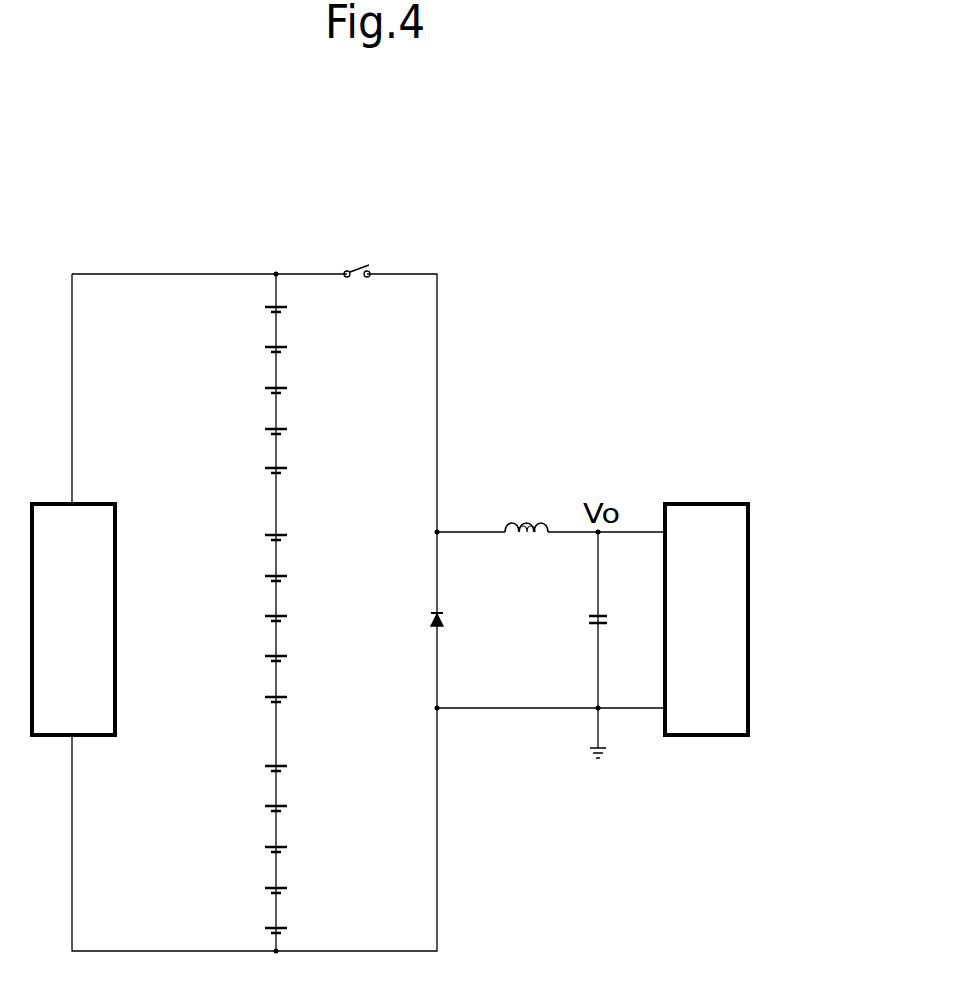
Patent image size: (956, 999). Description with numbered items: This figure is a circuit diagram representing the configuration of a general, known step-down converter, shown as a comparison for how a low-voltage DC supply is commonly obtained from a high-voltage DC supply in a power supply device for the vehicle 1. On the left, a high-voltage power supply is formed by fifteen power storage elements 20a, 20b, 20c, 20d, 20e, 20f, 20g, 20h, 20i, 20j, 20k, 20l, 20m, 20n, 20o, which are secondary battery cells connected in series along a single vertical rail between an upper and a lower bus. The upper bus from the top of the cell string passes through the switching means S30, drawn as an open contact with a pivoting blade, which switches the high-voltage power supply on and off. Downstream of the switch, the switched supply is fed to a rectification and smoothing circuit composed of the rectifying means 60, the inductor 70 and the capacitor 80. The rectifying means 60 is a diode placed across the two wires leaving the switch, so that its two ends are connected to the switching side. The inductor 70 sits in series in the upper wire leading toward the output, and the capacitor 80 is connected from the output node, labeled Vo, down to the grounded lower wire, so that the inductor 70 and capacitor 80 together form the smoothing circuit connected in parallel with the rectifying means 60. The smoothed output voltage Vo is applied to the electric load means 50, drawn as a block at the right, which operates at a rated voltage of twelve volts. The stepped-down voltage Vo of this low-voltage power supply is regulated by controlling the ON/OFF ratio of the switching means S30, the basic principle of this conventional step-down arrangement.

The power supply device for the vehicle 1 is at (628, 240).
The power storage element 20a is at (222, 311).
The power storage element 20b is at (222, 351).
The power storage element 20c is at (222, 392).
The power storage element 20d is at (222, 433).
The power storage element 20e is at (222, 472).
The power storage element 20f is at (222, 539).
The power storage element 20g is at (222, 580).
The power storage element 20h is at (222, 620).
The power storage element 20i is at (222, 660).
The power storage element 20j is at (222, 701).
The power storage element 20k is at (222, 770).
The power storage element 20l is at (222, 810).
The power storage element 20m is at (222, 851).
The power storage element 20n is at (222, 892).
The power storage element 20o is at (222, 932).
The switching means S30 is at (362, 258).
The electric load means 50 is at (715, 540).
The rectifying means 60 is at (457, 620).
The inductor 70 is at (522, 520).
The capacitor 80 is at (617, 618).